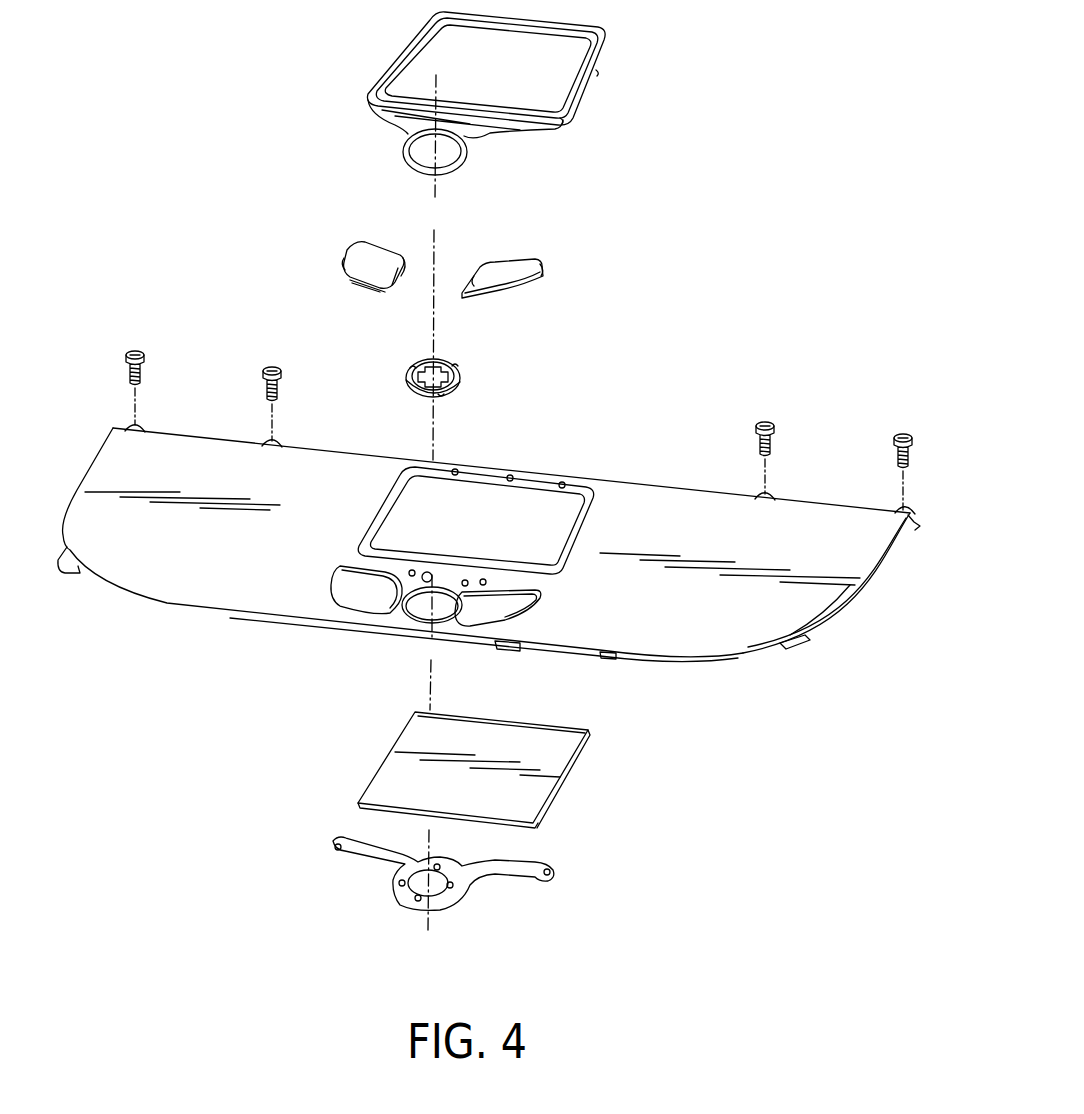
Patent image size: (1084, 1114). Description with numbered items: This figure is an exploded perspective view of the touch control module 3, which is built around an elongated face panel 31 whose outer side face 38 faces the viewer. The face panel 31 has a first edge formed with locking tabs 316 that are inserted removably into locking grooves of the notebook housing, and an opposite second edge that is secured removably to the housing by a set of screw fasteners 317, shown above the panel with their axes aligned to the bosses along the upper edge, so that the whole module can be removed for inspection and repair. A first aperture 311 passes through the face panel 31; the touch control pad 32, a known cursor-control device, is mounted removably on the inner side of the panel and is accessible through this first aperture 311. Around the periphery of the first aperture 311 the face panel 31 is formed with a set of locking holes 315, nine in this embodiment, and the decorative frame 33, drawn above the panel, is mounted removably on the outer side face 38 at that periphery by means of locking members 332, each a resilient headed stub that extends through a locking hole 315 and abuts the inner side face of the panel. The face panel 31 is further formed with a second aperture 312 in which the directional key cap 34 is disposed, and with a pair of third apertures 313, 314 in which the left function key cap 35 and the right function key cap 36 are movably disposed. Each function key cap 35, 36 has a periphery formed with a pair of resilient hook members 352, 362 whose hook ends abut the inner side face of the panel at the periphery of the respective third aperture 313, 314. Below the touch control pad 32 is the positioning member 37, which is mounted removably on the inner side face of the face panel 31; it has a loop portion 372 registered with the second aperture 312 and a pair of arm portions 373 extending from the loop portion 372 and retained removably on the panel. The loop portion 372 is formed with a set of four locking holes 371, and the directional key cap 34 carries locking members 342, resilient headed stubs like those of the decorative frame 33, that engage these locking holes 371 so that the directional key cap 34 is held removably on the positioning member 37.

The touch control module 3 is at (738, 287).
The face panel 31 is at (878, 572).
The first aperture 311 is at (410, 527).
The second aperture 312 is at (410, 612).
The third aperture 313 is at (350, 585).
The third aperture 314 is at (500, 610).
The locking holes 315 is at (400, 497).
The locking tabs 316 is at (605, 658).
The screw fasteners 317 is at (266, 370).
The touch control pad 32 is at (535, 783).
The decorative frame 33 is at (580, 90).
The locking members 332 is at (598, 72).
The directional key cap 34 is at (462, 382).
The locking members 342 is at (457, 390).
The left function key cap 35 is at (352, 277).
The resilient hook members 352 is at (347, 255).
The right function key cap 36 is at (505, 290).
The resilient hook members 362 is at (472, 278).
The positioning member 37 is at (465, 890).
The locking holes 371 is at (415, 901).
The loop portion 372 is at (433, 893).
The arm portions 373 is at (358, 852).
The outer side face 38 is at (820, 597).